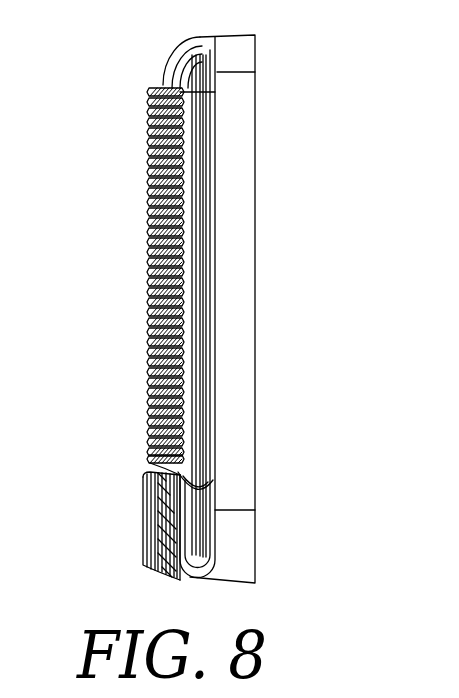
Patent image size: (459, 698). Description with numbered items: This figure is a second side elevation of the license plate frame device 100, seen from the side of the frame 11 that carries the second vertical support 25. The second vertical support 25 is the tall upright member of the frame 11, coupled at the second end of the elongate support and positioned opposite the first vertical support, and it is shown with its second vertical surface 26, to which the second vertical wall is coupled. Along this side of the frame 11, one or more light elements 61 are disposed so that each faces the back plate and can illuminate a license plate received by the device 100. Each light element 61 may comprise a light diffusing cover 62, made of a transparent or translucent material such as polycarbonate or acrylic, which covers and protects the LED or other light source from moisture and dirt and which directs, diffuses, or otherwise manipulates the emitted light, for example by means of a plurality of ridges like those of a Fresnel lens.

The license plate frame device 100 is at (305, 79).
The frame 11 is at (255, 547).
The second vertical support 25 is at (235, 288).
The second vertical surface 26 is at (195, 525).
The light element 61 is at (140, 185).
The light diffusing cover 62 is at (150, 288).